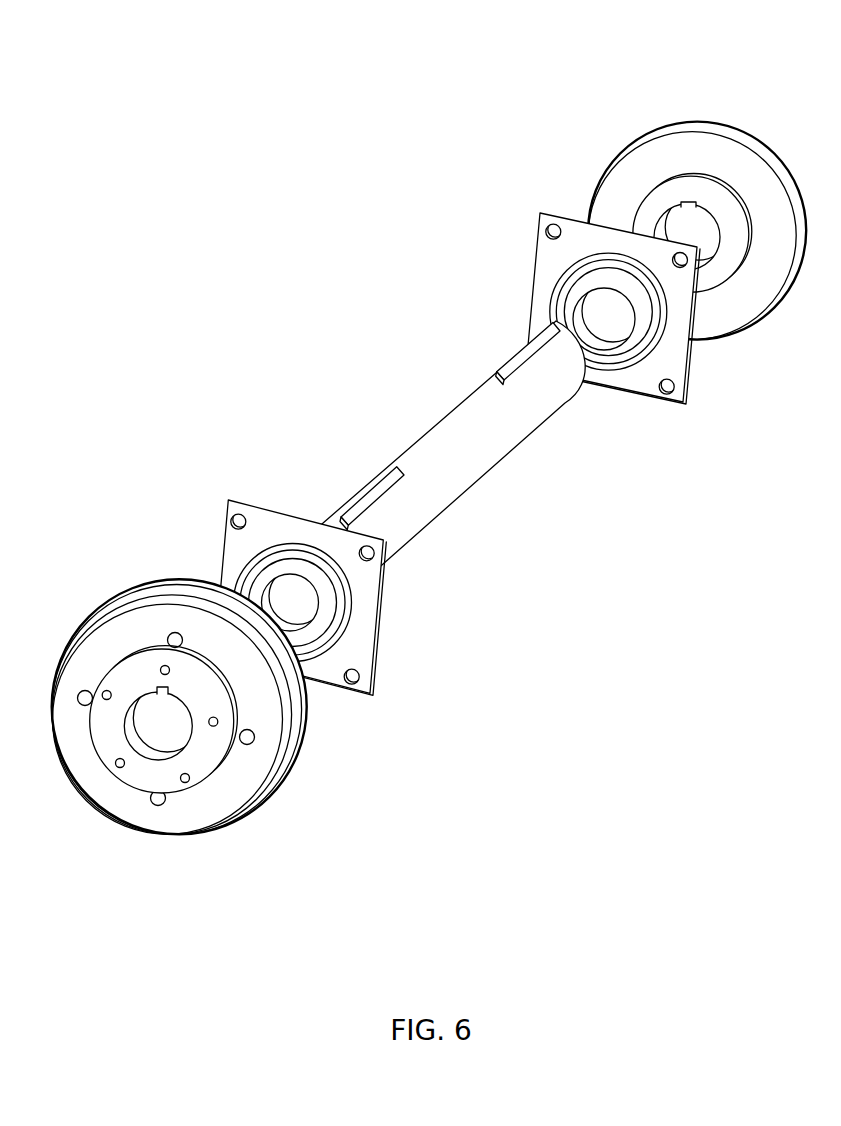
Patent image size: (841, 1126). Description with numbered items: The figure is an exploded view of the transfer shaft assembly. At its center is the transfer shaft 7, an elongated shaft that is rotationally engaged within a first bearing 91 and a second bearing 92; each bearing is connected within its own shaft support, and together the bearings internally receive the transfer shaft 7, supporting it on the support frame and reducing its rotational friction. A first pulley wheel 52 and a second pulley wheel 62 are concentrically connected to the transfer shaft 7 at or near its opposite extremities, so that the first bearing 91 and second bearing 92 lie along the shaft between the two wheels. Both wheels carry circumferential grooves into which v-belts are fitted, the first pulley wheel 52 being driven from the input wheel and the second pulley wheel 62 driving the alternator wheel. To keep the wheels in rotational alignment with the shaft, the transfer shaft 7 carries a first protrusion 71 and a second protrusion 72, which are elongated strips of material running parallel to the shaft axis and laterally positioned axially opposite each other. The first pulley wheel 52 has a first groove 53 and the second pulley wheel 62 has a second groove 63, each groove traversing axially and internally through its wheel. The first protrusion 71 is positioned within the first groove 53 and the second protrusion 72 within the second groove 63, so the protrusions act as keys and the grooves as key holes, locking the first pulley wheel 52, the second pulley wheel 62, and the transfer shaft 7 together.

The transfer shaft 7 is at (458, 428).
The first protrusion 71 is at (372, 500).
The second protrusion 72 is at (537, 335).
The first bearing 91 is at (310, 583).
The second bearing 92 is at (558, 298).
The first pulley wheel 52 is at (236, 782).
The first groove 53 is at (157, 688).
The second pulley wheel 62 is at (667, 158).
The second groove 63 is at (689, 202).